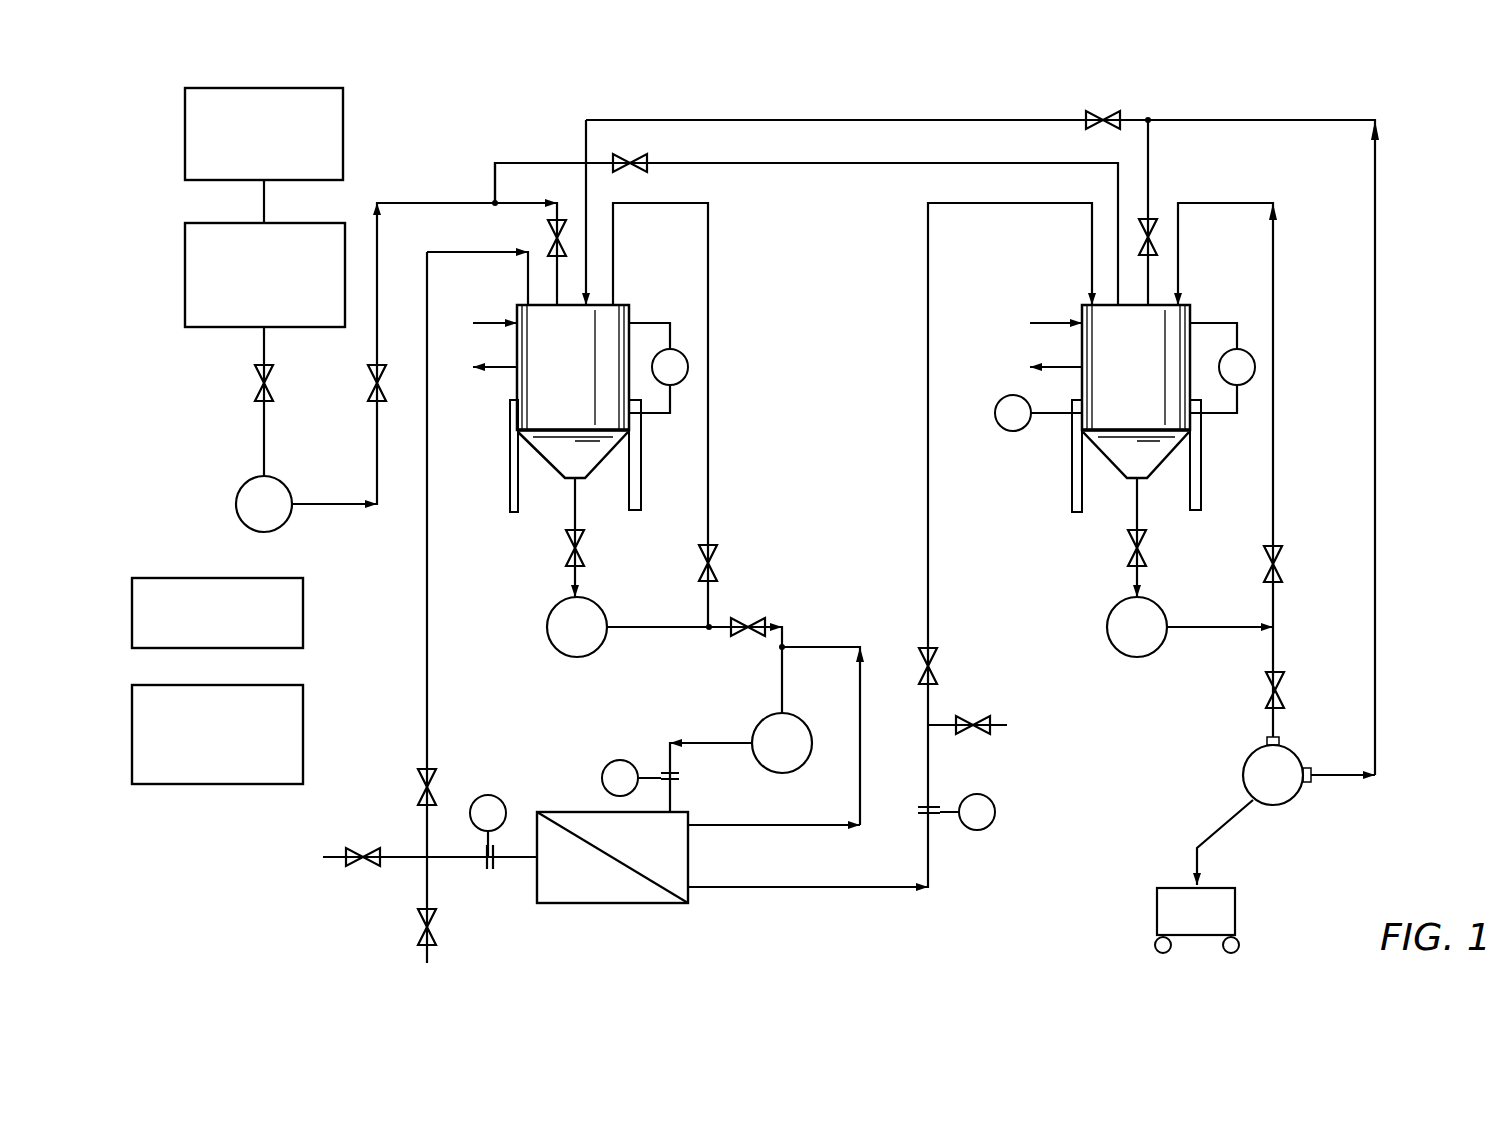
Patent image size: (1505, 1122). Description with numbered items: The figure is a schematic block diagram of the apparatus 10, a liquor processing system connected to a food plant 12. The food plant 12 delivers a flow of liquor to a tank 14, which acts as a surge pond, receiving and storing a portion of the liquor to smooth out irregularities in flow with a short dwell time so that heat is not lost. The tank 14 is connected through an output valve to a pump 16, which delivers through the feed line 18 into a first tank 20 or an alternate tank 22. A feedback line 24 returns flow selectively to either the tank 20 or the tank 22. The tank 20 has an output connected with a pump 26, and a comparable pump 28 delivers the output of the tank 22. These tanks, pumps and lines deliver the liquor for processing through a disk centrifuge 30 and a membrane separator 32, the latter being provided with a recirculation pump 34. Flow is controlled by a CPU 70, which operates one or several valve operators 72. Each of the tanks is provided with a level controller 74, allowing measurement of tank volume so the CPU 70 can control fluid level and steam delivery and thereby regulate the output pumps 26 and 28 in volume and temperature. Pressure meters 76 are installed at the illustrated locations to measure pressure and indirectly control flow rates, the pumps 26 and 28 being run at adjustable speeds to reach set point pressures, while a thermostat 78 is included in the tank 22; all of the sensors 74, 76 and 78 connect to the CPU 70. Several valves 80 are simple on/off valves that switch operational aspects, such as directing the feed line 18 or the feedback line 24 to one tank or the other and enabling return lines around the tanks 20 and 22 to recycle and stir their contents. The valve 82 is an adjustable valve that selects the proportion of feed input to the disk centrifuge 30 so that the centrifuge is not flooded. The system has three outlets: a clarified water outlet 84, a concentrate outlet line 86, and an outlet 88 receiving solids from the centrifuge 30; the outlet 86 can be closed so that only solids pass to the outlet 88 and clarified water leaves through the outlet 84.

The apparatus 10 is at (1432, 160).
The food plant 12 is at (344, 117).
The tank 14 is at (205, 330).
The pump 16 is at (289, 520).
The feed line 18 is at (417, 200).
The tank 20 is at (628, 305).
The tank 22 is at (1190, 305).
The feedback line 24 is at (847, 118).
The pump 26 is at (548, 641).
The pump 28 is at (1152, 656).
The disk centrifuge 30 is at (1296, 798).
The membrane separator 32 is at (656, 905).
The recirculation pump 34 is at (806, 764).
The CPU 70 is at (303, 617).
The valve operator 72 is at (185, 788).
The level controller 74 is at (686, 388).
The pressure meter 76 is at (489, 794).
The thermostat 78 is at (1012, 432).
The valve 80 is at (647, 160).
The valve 82 is at (1284, 684).
The clarified water outlet 84 is at (420, 957).
The concentrate outlet line 86 is at (1003, 720).
The outlet 88 is at (1193, 869).